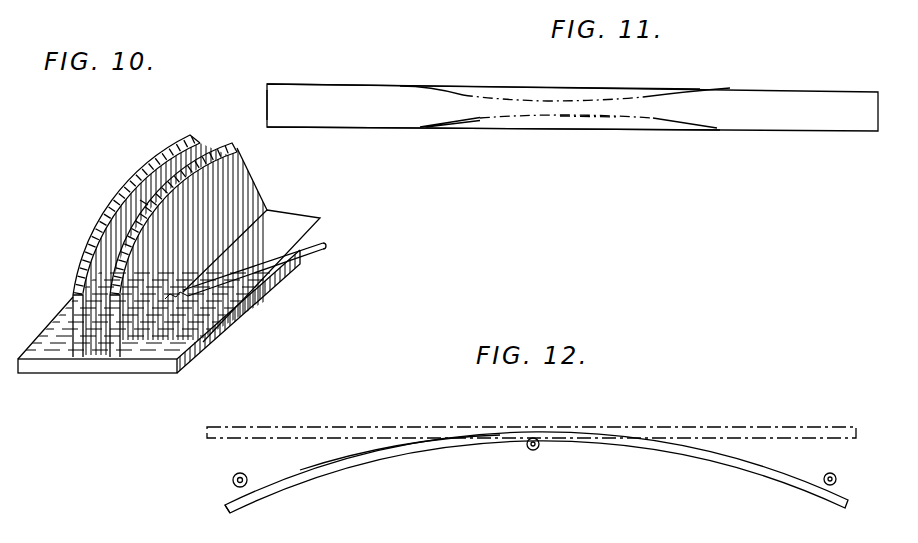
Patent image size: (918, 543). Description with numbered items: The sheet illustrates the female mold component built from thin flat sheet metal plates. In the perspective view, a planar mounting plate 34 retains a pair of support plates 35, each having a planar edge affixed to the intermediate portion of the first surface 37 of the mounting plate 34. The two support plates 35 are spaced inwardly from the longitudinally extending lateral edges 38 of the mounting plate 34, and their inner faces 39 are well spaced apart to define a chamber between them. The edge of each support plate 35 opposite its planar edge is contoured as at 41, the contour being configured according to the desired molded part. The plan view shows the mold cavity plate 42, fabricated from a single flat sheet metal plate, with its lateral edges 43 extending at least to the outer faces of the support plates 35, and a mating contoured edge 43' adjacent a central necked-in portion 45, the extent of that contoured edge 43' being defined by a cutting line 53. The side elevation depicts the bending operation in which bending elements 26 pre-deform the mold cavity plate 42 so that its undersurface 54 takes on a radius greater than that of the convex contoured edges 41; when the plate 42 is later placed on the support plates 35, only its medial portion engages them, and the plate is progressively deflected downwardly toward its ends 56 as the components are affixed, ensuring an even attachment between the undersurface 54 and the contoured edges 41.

In FIG. 12, the bending element 26 is at (232, 478).
In FIG. 10, the mounting plate 34 is at (247, 306).
In FIG. 10, the support plate 35 is at (72, 284).
In FIG. 10, the first surface 37 is at (290, 215).
In FIG. 10, the lateral edge 38 is at (212, 345).
In FIG. 10, the inner face 39 is at (145, 205).
In FIG. 10, the contoured edge 41 is at (197, 172).
In FIG. 11, the mold cavity plate 42 is at (797, 88).
In FIG. 12, the mold cavity plate 42 is at (347, 427).
In FIG. 11, the lateral edge 43 is at (544, 102).
In FIG. 11, the mating contoured edge 43' is at (565, 79).
In FIG. 11, the central necked-in portion 45 is at (567, 108).
In FIG. 11, the cutting line 53 is at (617, 118).
In FIG. 12, the undersurface 54 is at (288, 482).
In FIG. 11, the end 56 is at (267, 96).
In FIG. 12, the end 56 is at (222, 512).